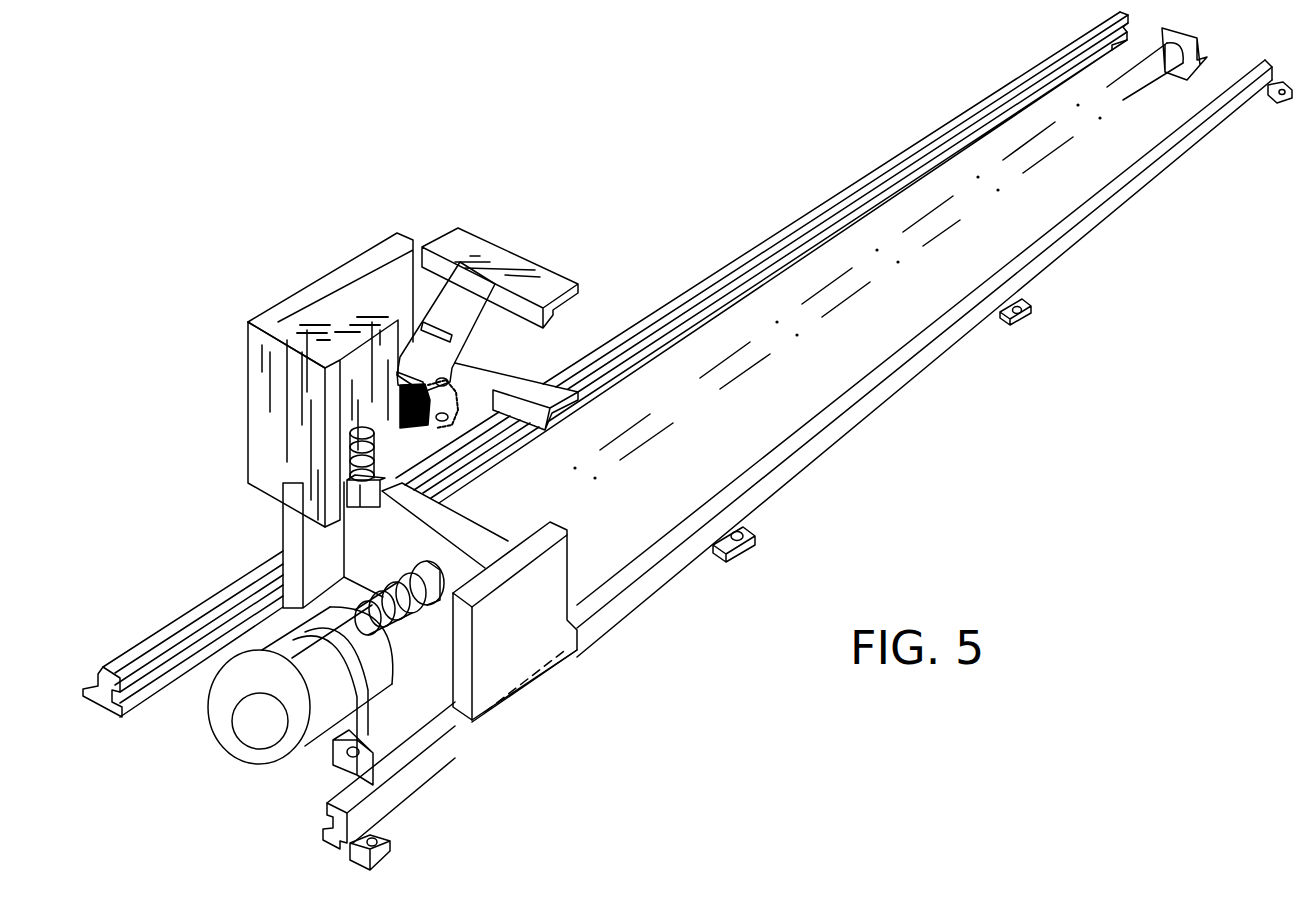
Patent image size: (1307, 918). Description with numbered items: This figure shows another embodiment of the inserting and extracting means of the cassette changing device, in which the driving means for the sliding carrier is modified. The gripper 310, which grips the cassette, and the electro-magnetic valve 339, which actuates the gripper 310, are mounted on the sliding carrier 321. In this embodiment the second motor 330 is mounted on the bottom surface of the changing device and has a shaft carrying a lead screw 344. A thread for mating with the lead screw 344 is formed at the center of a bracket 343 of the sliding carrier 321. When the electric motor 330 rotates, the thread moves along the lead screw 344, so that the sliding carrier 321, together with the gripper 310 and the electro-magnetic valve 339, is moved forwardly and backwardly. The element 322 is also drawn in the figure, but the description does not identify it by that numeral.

The gripper 310 is at (597, 299).
The sliding carrier 321 is at (517, 605).
The guide slot 322 is at (532, 670).
The second motor 330 is at (265, 735).
The electro-magnetic valve 339 is at (347, 327).
The bracket 343 is at (392, 555).
The lead screw 344 is at (412, 615).